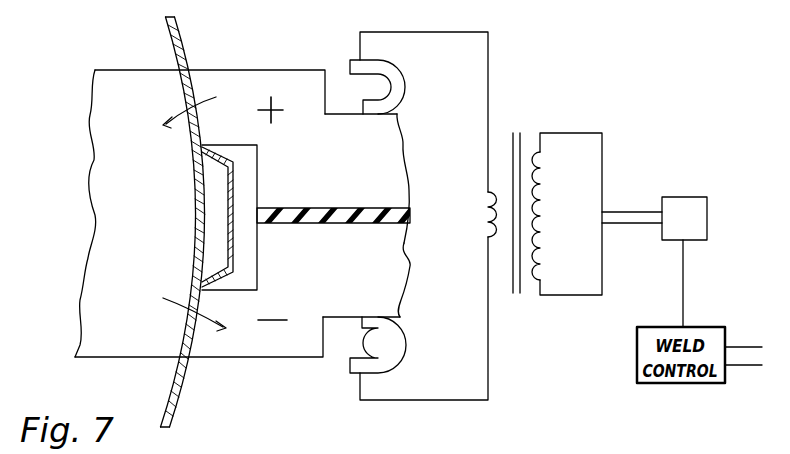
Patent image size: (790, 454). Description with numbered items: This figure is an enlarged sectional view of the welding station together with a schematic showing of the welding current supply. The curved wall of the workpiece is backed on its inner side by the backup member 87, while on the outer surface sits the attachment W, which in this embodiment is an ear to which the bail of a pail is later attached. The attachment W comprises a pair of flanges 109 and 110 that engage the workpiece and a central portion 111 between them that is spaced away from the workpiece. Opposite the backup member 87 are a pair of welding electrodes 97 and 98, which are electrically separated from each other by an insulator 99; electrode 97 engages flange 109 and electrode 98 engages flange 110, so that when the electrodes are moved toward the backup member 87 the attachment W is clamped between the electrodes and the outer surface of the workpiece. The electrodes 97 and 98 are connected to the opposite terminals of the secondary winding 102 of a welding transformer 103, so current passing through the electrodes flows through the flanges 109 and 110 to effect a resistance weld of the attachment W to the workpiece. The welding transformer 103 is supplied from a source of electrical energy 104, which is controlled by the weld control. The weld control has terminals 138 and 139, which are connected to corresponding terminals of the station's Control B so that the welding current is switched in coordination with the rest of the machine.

The backup member 87 is at (110, 243).
The attachment W is at (240, 180).
The flange 109 is at (200, 128).
The flange 110 is at (201, 298).
The central portion 111 is at (240, 235).
The welding electrode 97 is at (392, 157).
The welding electrode 98 is at (382, 262).
The insulator 99 is at (410, 212).
The secondary winding 102 is at (490, 207).
The welding transformer 103 is at (529, 296).
The source of electrical energy 104 is at (683, 207).
The terminal of the weld control 138 is at (752, 345).
The terminal of the weld control 139 is at (751, 368).